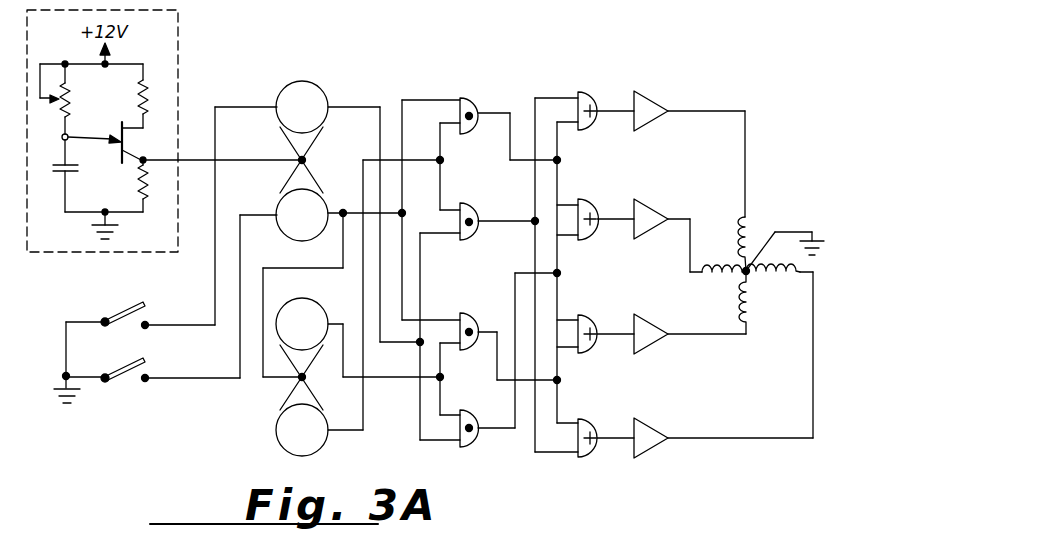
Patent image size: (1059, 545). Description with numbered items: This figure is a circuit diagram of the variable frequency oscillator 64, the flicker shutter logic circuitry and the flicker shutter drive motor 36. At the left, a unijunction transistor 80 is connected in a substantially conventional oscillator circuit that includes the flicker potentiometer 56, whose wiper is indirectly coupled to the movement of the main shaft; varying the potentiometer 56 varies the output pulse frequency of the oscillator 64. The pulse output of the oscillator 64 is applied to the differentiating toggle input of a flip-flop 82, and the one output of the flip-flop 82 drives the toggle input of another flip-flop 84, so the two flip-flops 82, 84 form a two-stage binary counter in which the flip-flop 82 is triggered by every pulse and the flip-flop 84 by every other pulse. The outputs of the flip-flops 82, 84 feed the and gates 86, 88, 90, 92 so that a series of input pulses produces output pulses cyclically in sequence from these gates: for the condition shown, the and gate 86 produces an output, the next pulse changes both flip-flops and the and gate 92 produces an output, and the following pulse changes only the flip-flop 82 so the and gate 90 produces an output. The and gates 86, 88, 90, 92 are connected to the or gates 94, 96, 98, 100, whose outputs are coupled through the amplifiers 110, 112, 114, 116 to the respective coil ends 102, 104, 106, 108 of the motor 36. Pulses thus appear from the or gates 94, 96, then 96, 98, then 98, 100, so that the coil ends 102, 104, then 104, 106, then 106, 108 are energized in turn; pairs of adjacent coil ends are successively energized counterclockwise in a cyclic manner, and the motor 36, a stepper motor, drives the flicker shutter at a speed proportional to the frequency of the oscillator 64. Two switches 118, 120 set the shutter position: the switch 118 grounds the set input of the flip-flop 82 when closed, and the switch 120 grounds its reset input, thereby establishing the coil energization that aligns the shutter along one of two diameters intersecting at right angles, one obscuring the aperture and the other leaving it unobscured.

The flicker shutter drive motor 36 is at (733, 277).
The flicker potentiometer 56 is at (70, 97).
The variable frequency oscillator 64 is at (180, 32).
The unijunction transistor 80 is at (122, 173).
The flip-flop 82 is at (322, 164).
The flip-flop 84 is at (312, 390).
The and gate 86 is at (463, 100).
The and gate 88 is at (463, 205).
The and gate 90 is at (463, 314).
The and gate 92 is at (463, 411).
The or gate 94 is at (581, 93).
The or gate 96 is at (581, 202).
The or gate 98 is at (583, 317).
The or gate 100 is at (582, 423).
The coil end 102 is at (746, 217).
The coil end 104 is at (690, 278).
The coil end 106 is at (748, 334).
The coil end 108 is at (806, 272).
The amplifier 110 is at (650, 95).
The amplifier 112 is at (650, 203).
The amplifier 114 is at (650, 320).
The amplifier 116 is at (658, 422).
The switch 118 is at (127, 307).
The switch 120 is at (128, 362).